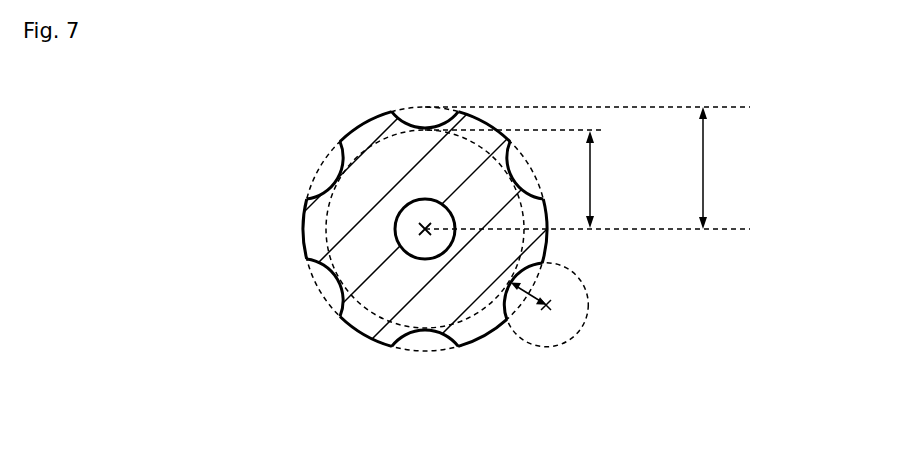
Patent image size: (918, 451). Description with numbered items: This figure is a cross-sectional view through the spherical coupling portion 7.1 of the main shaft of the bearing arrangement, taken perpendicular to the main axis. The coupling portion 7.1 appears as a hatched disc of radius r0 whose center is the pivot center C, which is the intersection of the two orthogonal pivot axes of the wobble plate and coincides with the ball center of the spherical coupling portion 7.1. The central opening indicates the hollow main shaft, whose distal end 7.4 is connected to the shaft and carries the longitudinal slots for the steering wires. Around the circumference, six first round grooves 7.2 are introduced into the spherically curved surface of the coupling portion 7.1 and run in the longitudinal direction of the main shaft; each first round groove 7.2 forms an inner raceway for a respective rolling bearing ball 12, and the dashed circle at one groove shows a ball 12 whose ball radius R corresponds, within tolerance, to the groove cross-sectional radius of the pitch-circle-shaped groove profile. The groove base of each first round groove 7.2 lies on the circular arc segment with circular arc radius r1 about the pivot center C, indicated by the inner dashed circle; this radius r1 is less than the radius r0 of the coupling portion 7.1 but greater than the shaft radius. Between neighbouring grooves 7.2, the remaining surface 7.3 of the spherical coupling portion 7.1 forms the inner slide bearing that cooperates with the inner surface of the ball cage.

The spherical coupling portion 7.1 is at (356, 119).
The first round grooves 7.2 is at (430, 113).
The surface of the spherical coupling portion 7.3 is at (302, 230).
The distal end of the main shaft 7.4 is at (422, 248).
The pivot center C is at (420, 228).
The rolling bearing ball 12 is at (545, 338).
The ball radius R is at (536, 286).
The circular arc radius r1 is at (590, 157).
The radius of the coupling portion r0 is at (703, 163).